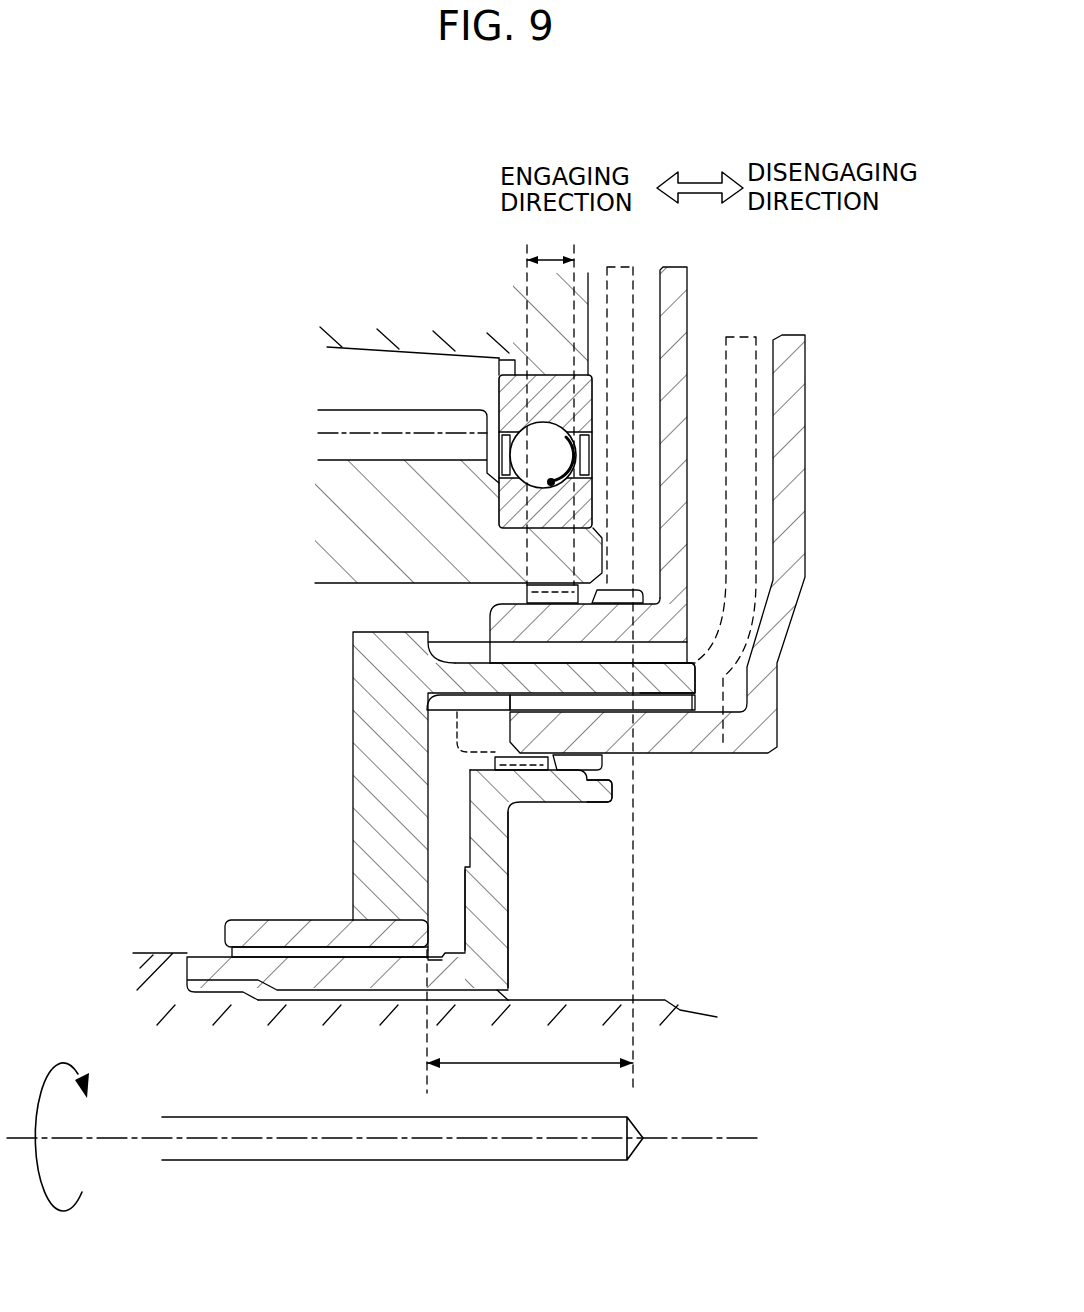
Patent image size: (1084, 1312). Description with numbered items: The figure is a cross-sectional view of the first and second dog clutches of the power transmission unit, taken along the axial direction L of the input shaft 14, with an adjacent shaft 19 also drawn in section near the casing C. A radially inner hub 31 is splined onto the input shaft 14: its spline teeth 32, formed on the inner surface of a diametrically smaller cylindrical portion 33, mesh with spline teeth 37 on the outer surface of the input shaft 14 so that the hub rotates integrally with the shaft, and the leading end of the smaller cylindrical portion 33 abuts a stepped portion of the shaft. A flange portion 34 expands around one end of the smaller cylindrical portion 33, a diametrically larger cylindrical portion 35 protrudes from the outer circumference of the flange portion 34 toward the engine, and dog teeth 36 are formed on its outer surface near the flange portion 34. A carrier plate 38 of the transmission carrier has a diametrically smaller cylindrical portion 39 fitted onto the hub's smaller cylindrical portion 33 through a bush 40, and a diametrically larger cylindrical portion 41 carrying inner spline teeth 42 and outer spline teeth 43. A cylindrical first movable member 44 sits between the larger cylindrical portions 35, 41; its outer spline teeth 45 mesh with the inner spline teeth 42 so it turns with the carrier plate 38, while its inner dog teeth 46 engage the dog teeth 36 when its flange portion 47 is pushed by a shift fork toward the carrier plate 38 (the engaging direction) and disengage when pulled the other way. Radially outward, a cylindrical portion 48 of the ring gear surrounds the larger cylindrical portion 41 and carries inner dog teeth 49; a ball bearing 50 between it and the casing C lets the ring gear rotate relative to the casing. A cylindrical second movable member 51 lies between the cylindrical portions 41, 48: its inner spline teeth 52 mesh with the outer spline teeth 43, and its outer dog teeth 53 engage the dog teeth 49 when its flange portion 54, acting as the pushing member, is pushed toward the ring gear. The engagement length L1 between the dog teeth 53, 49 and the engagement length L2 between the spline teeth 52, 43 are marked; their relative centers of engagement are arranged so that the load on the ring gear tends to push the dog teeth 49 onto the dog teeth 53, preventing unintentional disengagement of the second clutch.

The input shaft 14 is at (652, 1012).
The input shaft 19 is at (398, 425).
The radially inner hub 31 is at (622, 899).
The spline teeth 32 is at (508, 992).
The diametrically smaller cylindrical portion 33 is at (371, 982).
The flange portion 34 is at (497, 912).
The diametrically larger cylindrical portion 35 is at (598, 798).
The dog teeth 36 is at (536, 771).
The spline teeth 37 is at (468, 995).
The carrier plate 38 is at (268, 761).
The diametrically smaller cylindrical portion 39 is at (290, 920).
The bush 40 is at (237, 953).
The diametrically larger cylindrical portion 41 is at (690, 675).
The inner spline teeth 42 is at (433, 707).
The outer spline teeth 43 is at (452, 653).
The first movable member 44 is at (816, 777).
The outer spline teeth 45 is at (683, 700).
The dog teeth 46 is at (597, 762).
The flange portion 47 is at (795, 490).
The cylindrical portion 48 is at (340, 473).
The dog teeth 49 is at (527, 592).
The ball bearing 50 is at (507, 355).
The second movable member 51 is at (741, 258).
The inner spline teeth 52 is at (670, 652).
The dog teeth 53 is at (645, 594).
The flange portion 54 is at (677, 352).
The casing C is at (474, 357).
The axial direction L is at (704, 1137).
The engagement length L1 is at (550, 409).
The engagement length L2 is at (530, 1023).